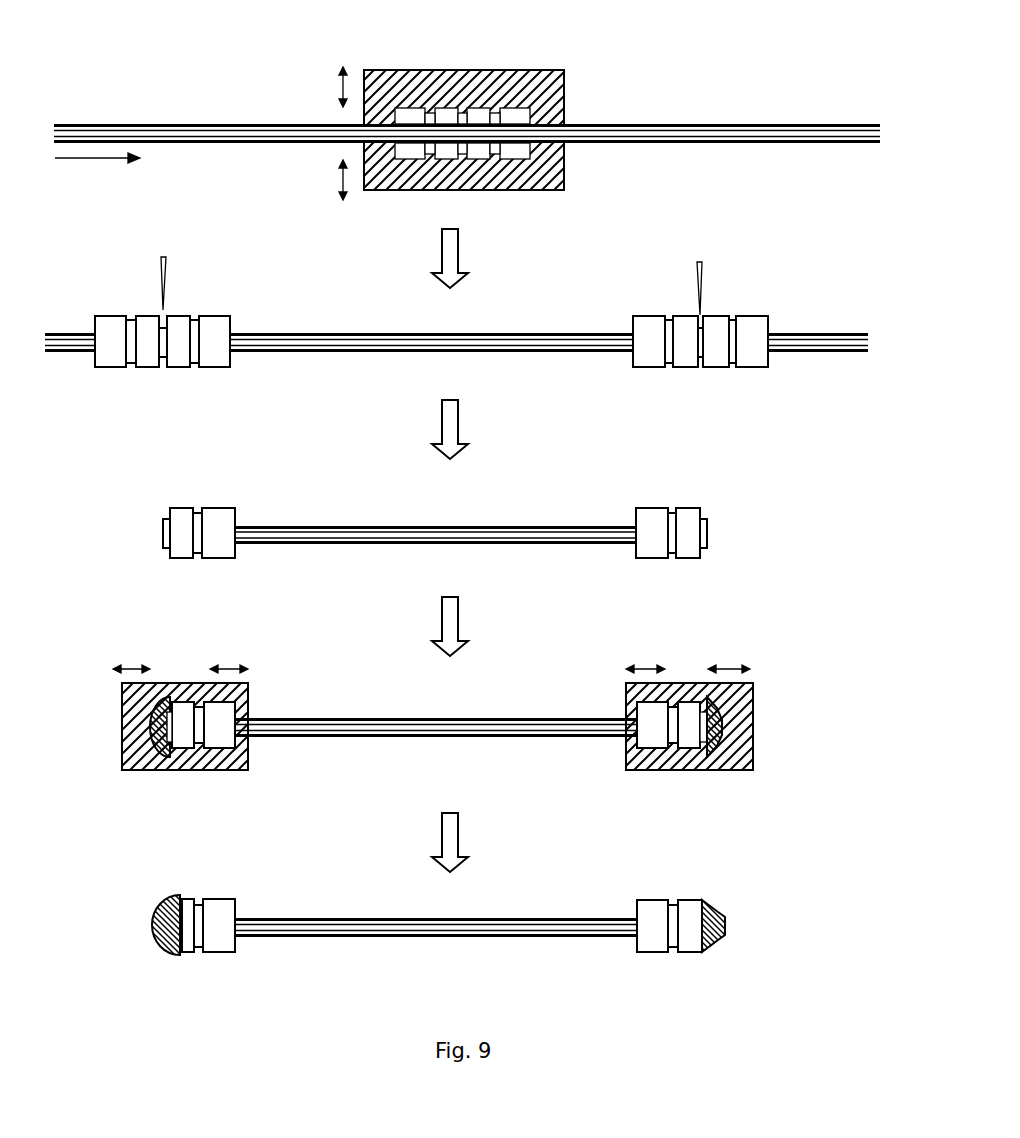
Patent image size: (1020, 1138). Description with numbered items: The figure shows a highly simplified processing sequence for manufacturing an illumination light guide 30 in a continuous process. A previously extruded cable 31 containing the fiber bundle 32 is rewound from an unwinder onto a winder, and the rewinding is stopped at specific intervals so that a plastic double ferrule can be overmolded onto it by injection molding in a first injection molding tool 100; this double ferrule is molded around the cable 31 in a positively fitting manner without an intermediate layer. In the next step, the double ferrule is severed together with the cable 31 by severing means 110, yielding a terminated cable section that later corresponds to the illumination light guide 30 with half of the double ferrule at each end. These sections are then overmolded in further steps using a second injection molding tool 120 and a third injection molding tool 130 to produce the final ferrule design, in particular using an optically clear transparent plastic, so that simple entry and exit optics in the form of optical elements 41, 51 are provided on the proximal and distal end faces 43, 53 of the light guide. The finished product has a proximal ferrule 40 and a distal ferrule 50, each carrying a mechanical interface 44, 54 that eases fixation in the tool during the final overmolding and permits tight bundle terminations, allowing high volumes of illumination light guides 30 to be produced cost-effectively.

The illumination light guide 30 is at (598, 525).
The cable 31 is at (133, 125).
The fiber bundle 32 is at (178, 135).
The proximal ferrule 40 is at (190, 953).
The optical element 41 is at (162, 957).
The proximal end face 43 is at (150, 762).
The mechanical interface 44 is at (212, 953).
The distal ferrule 50 is at (653, 953).
The optical element 51 is at (713, 950).
The distal end face 53 is at (713, 745).
The mechanical interface 54 is at (680, 953).
The first injection molding tool 100 is at (384, 70).
The severing means 110 is at (163, 307).
The second injection molding tool 120 is at (178, 698).
The third injection molding tool 130 is at (753, 695).